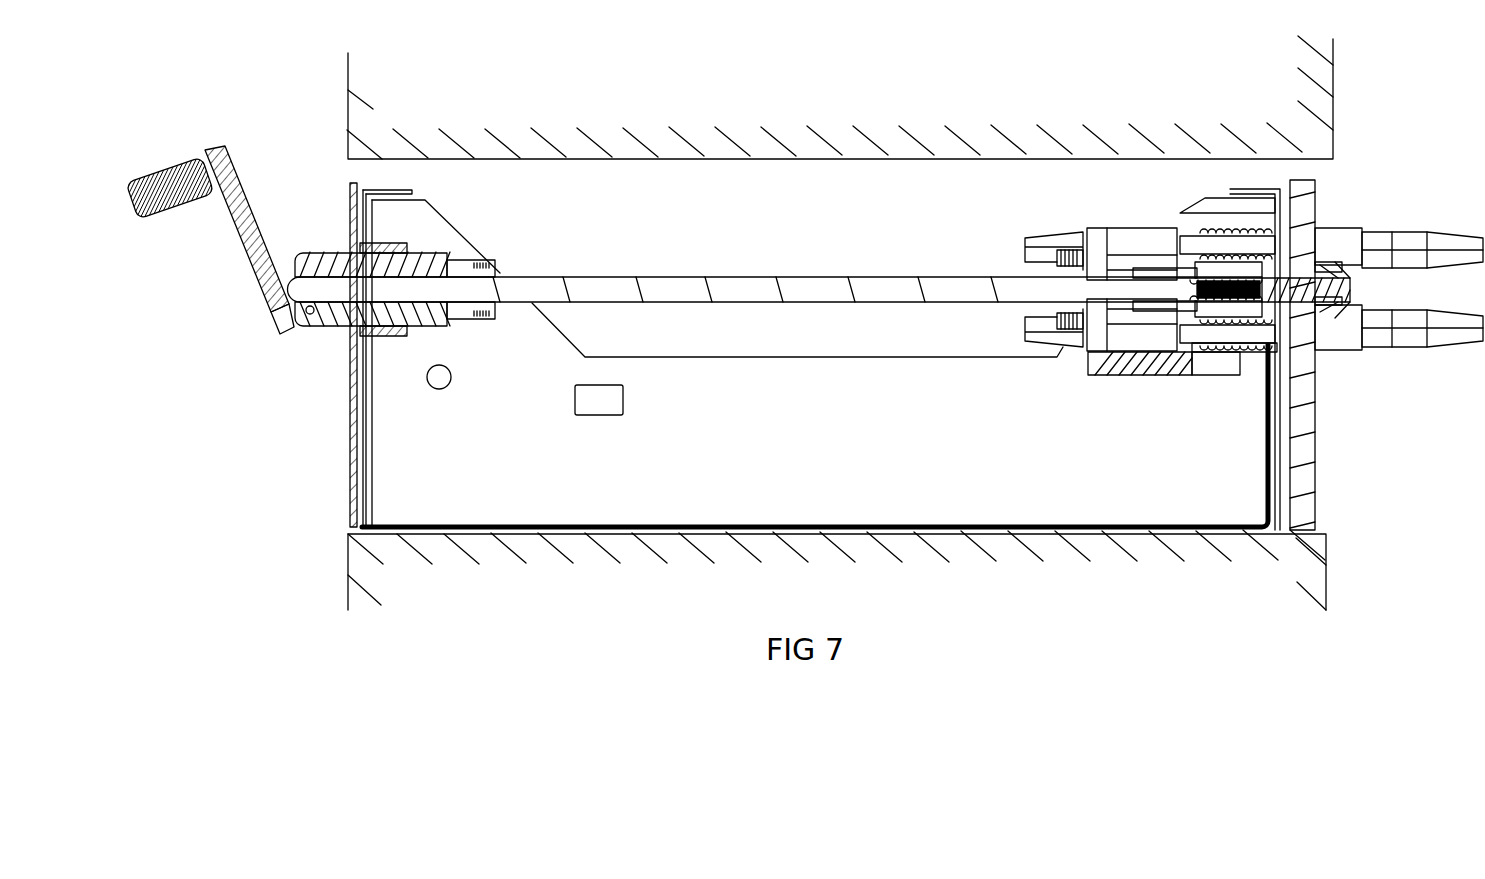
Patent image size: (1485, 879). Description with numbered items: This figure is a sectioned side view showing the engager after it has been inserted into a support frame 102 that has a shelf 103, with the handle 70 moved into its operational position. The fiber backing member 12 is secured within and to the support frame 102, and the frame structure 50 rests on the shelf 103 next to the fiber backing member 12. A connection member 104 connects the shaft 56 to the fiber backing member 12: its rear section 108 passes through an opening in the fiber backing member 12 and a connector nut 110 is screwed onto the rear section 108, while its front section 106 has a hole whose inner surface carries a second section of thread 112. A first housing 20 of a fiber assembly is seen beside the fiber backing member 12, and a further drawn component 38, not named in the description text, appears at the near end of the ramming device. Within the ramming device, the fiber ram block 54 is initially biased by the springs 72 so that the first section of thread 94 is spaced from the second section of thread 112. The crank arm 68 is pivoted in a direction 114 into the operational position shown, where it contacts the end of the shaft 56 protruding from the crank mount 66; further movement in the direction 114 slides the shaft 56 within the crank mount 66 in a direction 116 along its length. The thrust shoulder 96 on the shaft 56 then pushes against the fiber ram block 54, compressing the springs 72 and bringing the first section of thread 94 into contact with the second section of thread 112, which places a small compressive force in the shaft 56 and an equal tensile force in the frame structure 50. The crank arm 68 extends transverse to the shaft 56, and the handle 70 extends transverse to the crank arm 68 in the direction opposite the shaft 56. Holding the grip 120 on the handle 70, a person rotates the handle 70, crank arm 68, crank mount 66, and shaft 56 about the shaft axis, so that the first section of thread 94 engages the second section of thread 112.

The fiber backing member 12 is at (1315, 485).
The first housing 20 is at (1415, 232).
The connector 38 is at (1062, 233).
The frame structure 50 is at (820, 530).
The fiber ram block 54 is at (1128, 228).
The shaft 56 is at (835, 277).
The crank mount 66 is at (420, 303).
The crank arm 68 is at (210, 227).
The handle 70 is at (144, 213).
The springs 72 is at (1228, 230).
The first section of thread 94 is at (1168, 268).
The thrust shoulder 96 is at (1078, 305).
The support frame 102 is at (346, 105).
The shelf 103 is at (767, 589).
The connection member 104 is at (1352, 290).
The front section 106 is at (1262, 327).
The rear section 108 is at (1338, 307).
The connector nut 110 is at (1330, 266).
The second section of thread 112 is at (1268, 250).
The direction of crank arm pivoting 114 is at (183, 272).
The direction of shaft sliding 116 is at (692, 255).
The grip 120 is at (186, 165).